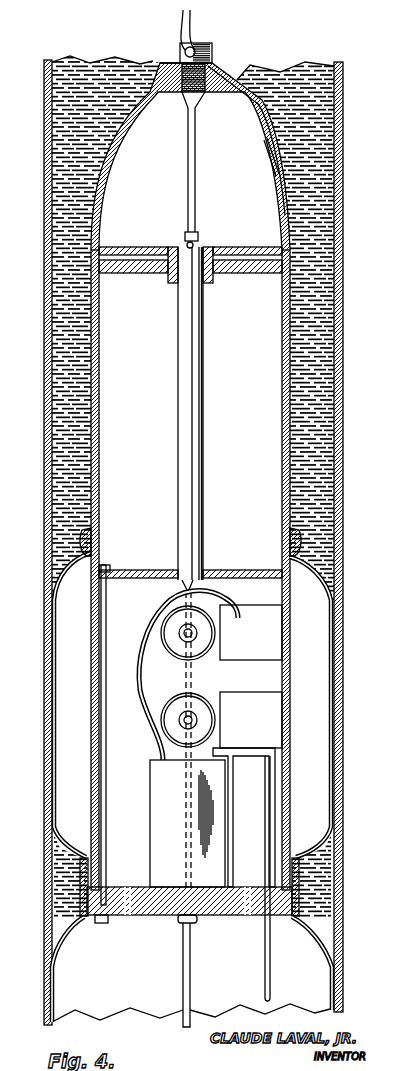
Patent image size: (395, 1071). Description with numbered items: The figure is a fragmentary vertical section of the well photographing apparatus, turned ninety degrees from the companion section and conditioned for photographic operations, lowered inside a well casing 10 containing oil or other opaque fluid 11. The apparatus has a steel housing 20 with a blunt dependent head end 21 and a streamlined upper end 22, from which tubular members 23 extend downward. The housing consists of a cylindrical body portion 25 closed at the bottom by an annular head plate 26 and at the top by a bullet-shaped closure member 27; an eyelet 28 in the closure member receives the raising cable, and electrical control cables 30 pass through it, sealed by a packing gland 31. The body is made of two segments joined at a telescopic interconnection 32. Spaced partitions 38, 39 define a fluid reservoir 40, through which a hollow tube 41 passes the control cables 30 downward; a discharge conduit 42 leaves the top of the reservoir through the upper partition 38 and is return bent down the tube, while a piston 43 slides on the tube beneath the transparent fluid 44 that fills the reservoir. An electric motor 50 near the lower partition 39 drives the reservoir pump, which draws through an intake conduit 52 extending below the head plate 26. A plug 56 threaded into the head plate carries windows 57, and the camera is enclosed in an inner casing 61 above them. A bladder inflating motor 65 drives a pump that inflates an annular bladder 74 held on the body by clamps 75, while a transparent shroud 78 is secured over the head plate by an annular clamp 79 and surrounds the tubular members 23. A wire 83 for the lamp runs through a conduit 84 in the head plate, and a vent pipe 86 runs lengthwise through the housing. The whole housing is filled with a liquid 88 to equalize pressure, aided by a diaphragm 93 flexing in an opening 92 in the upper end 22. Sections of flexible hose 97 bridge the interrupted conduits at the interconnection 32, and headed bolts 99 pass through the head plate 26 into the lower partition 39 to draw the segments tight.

The well casing 10 is at (49, 55).
The opaque fluid 11 is at (322, 210).
The housing 20 is at (156, 74).
The head end 21 is at (280, 920).
The upper end 22 is at (247, 94).
The tubular members 23 is at (256, 981).
The body portion 25 is at (99, 432).
The head plate 26 is at (112, 920).
The closure member 27 is at (132, 107).
The eyelet 28 is at (192, 23).
The electrical control cables 30 is at (196, 130).
The packing gland 31 is at (212, 50).
The telescopic interconnection 32 is at (286, 645).
The upper partition 38 is at (118, 252).
The lower partition 39 is at (244, 571).
The fluid reservoir 40 is at (238, 379).
The hollow tube 41 is at (193, 450).
The discharge conduit 42 is at (196, 234).
The piston 43 is at (246, 275).
The transparent fluid 44 is at (134, 379).
The electric motor 50 is at (172, 627).
The intake conduit 52 is at (183, 978).
The plug 56 is at (158, 905).
The windows 57 is at (196, 922).
The inner casing 61 is at (214, 806).
The bladder inflating motor 65 is at (181, 705).
The annular bladder 74 is at (333, 568).
The clamps 75 is at (88, 545).
The shroud 78 is at (302, 926).
The annular clamp 79 is at (302, 900).
The wire 83 is at (247, 757).
The conduit 84 is at (266, 930).
The vent pipe 86 is at (194, 245).
The liquid 88 is at (141, 465).
The opening 92 is at (266, 158).
The diaphragm 93 is at (272, 176).
The flexible hose 97 is at (240, 618).
The headed bolts 99 is at (106, 805).